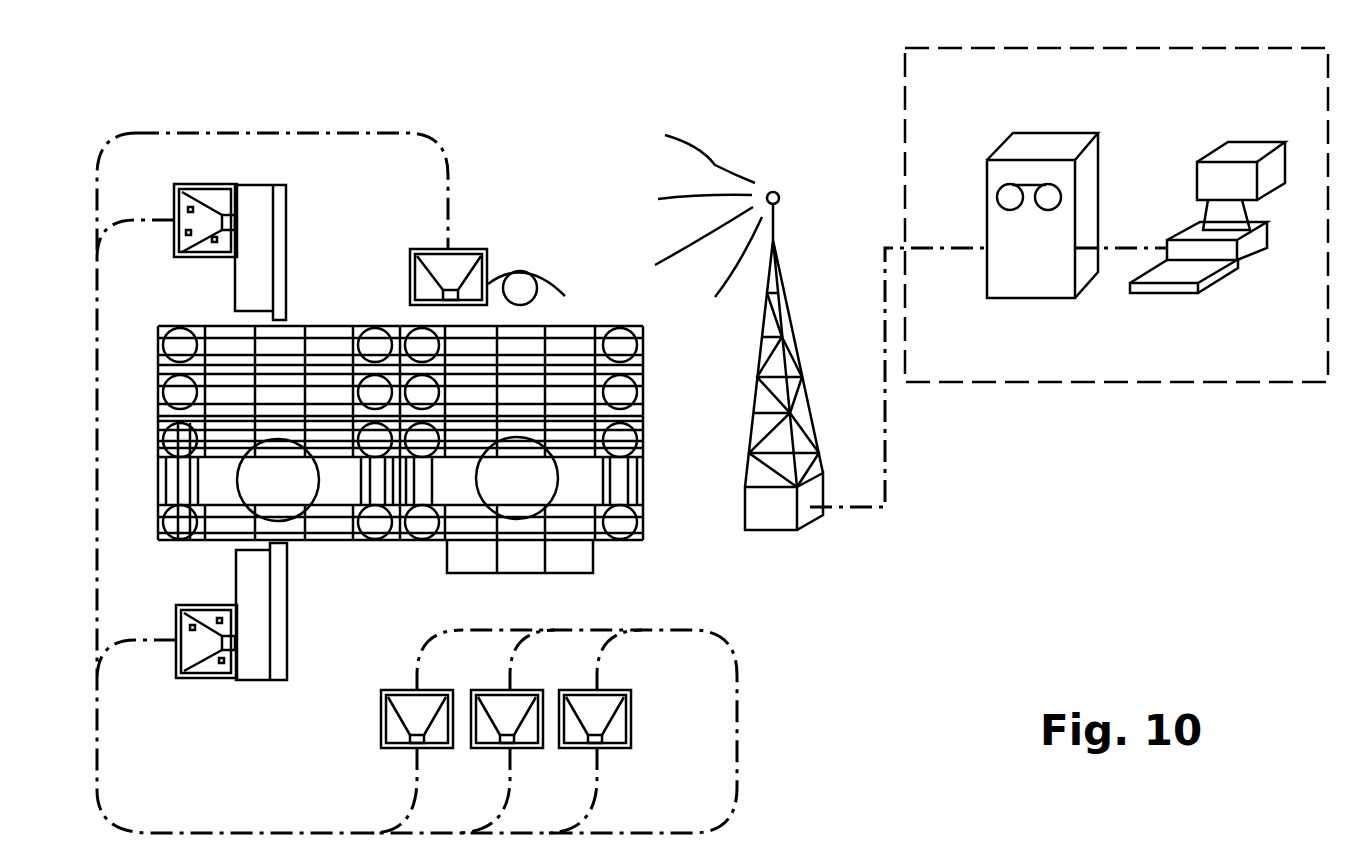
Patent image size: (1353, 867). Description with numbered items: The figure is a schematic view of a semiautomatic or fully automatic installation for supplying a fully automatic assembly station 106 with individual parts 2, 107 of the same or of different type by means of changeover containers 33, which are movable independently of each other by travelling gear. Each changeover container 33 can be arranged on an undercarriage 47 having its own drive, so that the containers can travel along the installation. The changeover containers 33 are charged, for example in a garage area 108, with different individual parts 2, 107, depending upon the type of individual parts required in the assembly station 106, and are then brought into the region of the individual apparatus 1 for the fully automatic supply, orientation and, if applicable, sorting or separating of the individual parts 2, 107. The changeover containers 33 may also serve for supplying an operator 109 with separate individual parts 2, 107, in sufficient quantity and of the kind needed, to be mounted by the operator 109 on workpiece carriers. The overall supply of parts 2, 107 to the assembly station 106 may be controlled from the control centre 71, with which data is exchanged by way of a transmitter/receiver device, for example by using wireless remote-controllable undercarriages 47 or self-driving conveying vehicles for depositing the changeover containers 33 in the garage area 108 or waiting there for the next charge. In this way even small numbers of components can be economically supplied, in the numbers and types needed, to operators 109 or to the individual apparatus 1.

The individual apparatus 1 is at (265, 256).
The individual parts 2 is at (208, 649).
The changeover container 33 is at (228, 190).
The undercarriage 47 is at (181, 179).
The control centre 71 is at (921, 139).
The assembly station 106 is at (371, 310).
The individual parts 107 is at (208, 215).
The garage area 108 is at (686, 693).
The operator 109 is at (513, 283).